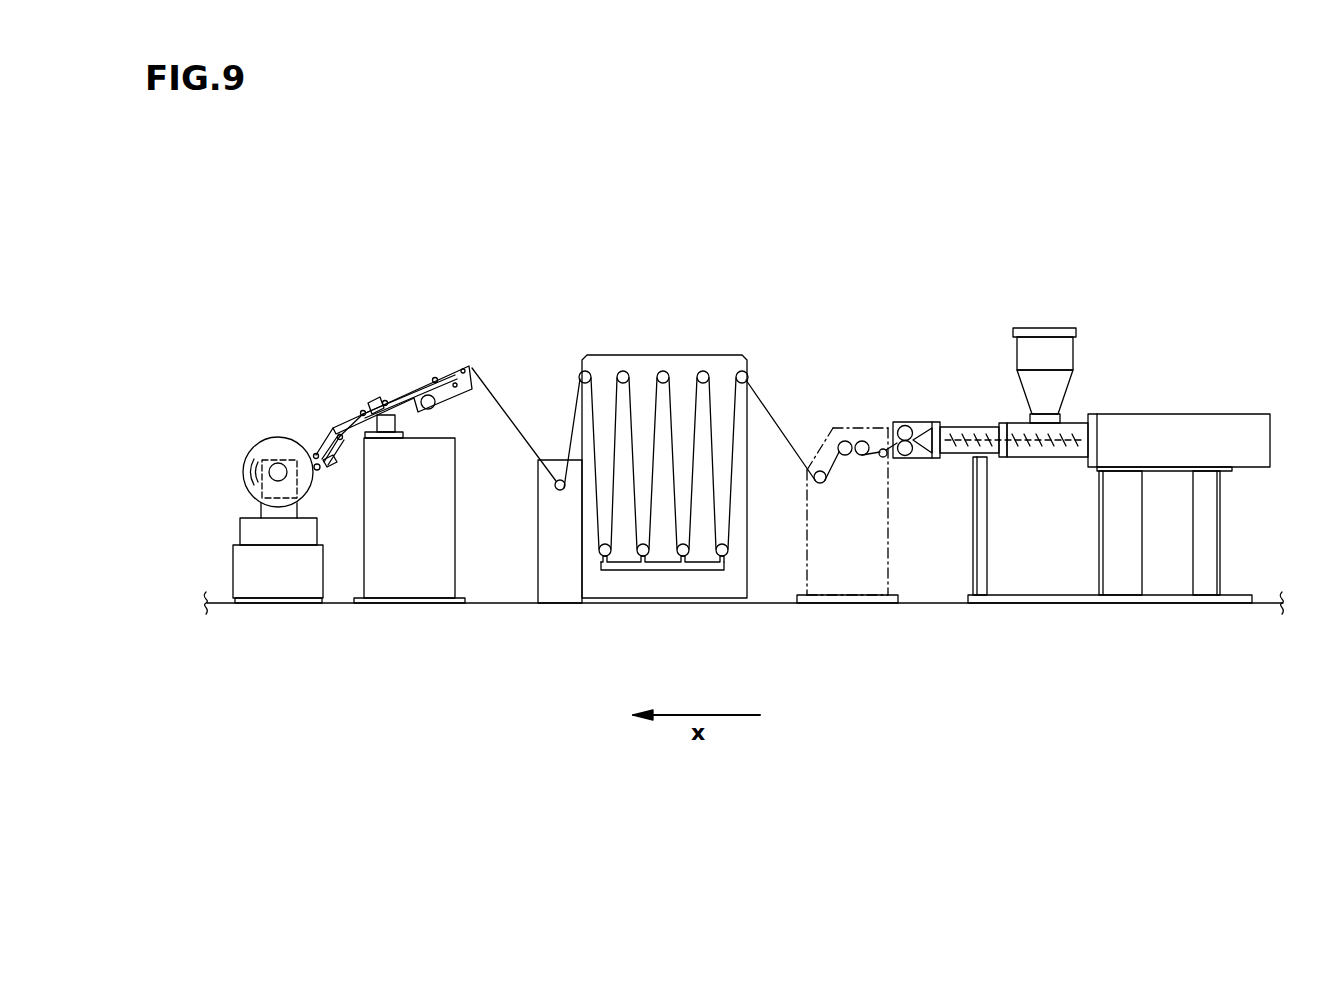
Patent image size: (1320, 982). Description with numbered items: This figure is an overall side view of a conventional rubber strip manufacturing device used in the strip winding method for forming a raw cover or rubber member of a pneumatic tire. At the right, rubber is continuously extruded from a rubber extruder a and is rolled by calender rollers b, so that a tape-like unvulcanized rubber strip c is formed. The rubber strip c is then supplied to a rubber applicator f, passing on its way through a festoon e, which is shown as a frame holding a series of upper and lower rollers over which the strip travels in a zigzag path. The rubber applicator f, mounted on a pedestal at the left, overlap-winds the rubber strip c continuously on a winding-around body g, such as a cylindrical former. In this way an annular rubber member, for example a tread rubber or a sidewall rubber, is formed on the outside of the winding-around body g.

The rubber extruder a is at (1087, 377).
The calender rollers b is at (905, 418).
The rubber strip c is at (785, 427).
The festoon e is at (660, 343).
The rubber applicator f is at (380, 397).
The winding-around body g is at (270, 440).